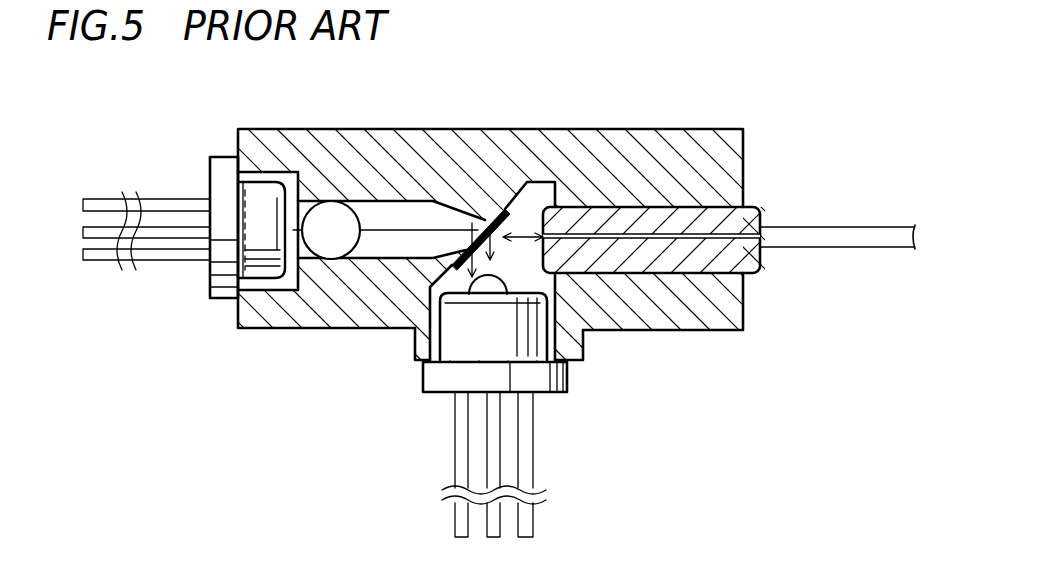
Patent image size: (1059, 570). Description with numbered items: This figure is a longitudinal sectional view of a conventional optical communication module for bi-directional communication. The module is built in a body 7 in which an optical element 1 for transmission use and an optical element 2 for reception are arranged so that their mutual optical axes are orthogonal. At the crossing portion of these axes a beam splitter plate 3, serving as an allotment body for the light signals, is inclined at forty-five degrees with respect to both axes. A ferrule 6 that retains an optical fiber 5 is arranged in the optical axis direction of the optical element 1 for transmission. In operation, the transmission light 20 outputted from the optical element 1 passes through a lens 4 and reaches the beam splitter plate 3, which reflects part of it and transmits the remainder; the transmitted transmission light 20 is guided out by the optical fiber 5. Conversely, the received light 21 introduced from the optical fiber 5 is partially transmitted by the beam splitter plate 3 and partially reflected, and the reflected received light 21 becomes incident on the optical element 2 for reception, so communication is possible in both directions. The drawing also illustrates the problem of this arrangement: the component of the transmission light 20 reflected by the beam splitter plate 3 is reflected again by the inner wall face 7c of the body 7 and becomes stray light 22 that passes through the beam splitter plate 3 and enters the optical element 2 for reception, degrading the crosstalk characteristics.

The optical element for transmission use 1 is at (213, 174).
The optical element for reception 2 is at (568, 385).
The beam splitter plate 3 is at (520, 182).
The lens 4 is at (304, 216).
The optical fiber 5 is at (737, 240).
The ferrule 6 is at (734, 212).
The body 7 is at (340, 129).
The inner wall face 7c is at (437, 203).
The transmission light 20 is at (408, 231).
The received light 21 is at (482, 240).
The stray light 22 is at (466, 276).